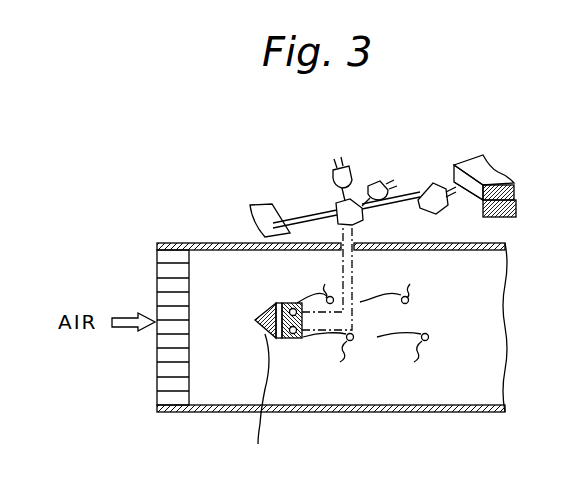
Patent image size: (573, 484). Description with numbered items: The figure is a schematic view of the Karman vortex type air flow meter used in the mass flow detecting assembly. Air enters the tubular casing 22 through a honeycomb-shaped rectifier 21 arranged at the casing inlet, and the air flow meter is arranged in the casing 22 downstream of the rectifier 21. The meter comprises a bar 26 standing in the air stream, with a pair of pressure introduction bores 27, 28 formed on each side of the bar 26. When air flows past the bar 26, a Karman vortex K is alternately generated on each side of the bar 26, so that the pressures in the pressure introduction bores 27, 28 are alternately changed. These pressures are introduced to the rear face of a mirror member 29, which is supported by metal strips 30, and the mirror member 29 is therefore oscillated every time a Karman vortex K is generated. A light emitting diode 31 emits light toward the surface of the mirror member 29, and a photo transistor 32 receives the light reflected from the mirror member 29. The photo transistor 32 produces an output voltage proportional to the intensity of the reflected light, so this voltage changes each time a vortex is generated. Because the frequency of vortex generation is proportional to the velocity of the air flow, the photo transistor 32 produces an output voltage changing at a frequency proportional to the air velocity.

The honeycomb-shaped rectifier 21 is at (165, 366).
The tubular casing 22 is at (400, 412).
The bar 26 is at (255, 401).
The pressure introduction bore 27 is at (298, 305).
The pressure introduction bore 28 is at (294, 338).
The mirror member 29 is at (364, 218).
The metal strips 30 is at (299, 219).
The light emitting diode 31 is at (348, 161).
The photo transistor 32 is at (373, 178).
The Karman vortex K is at (363, 324).